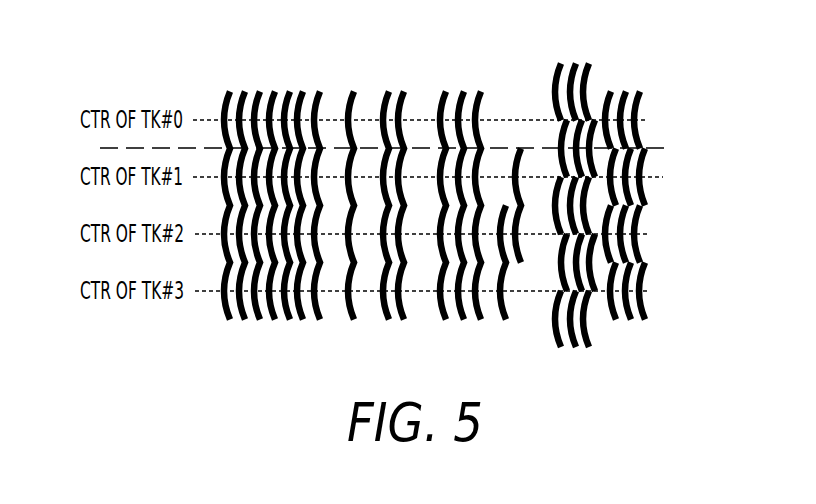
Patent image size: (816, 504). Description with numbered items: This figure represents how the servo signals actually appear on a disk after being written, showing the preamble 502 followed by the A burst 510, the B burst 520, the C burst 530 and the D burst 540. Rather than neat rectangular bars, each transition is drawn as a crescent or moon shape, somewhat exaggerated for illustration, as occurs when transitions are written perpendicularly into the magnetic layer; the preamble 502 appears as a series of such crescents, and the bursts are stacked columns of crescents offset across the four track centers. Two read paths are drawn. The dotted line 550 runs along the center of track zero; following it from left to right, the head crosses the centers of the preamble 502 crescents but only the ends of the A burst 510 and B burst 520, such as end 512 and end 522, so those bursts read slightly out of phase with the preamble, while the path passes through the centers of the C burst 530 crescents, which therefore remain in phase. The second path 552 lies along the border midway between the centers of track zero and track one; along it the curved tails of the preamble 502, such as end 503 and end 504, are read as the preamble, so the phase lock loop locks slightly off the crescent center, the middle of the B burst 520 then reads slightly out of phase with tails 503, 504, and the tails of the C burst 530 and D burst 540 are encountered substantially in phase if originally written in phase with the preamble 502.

The preamble 502 is at (318, 110).
The end of preamble signal 503 is at (316, 142).
The end of preamble signal 504 is at (320, 157).
The A burst 510 is at (589, 84).
The end of A burst signal 512 is at (590, 110).
The B burst 520 is at (557, 132).
The end of B burst signal 522 is at (637, 129).
The C burst 530 is at (639, 117).
The D burst 540 is at (641, 175).
The path along center of track zero 550 is at (200, 117).
The path along border of tracks zero and one 552 is at (90, 147).